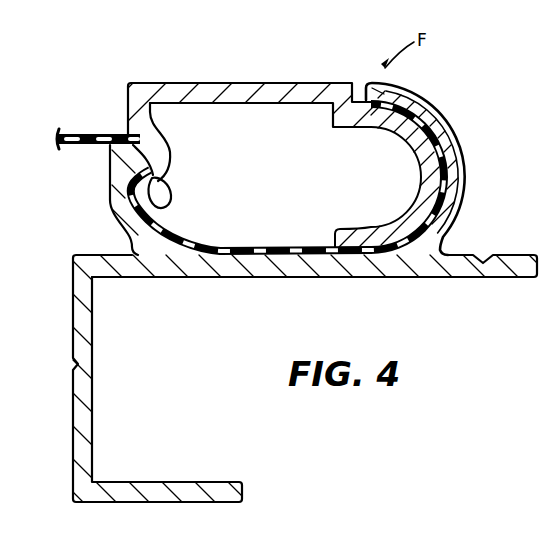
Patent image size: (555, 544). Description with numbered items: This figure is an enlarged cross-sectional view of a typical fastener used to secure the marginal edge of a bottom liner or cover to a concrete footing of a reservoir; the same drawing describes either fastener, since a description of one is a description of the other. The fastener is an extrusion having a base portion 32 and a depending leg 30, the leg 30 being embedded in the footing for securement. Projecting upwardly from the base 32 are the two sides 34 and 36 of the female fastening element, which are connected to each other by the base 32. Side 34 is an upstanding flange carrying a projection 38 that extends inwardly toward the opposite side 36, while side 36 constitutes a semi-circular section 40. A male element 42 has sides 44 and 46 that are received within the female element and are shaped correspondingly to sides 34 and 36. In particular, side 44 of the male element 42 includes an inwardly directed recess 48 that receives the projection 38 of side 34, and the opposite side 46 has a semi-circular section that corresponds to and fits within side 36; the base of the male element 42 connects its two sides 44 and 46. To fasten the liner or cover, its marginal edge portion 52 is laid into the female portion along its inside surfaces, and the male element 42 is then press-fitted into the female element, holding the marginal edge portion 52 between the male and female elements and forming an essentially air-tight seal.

The depending leg 30 is at (93, 400).
The base portion 32 is at (168, 278).
The side 34 is at (112, 200).
The side 36 is at (463, 173).
The projection 38 is at (140, 163).
The semi-circular section 40 is at (457, 127).
The male element 42 is at (203, 83).
The side 44 is at (168, 152).
The side 46 is at (421, 190).
The inwardly directed recess 48 is at (160, 188).
The marginal edge portion 52 is at (272, 247).